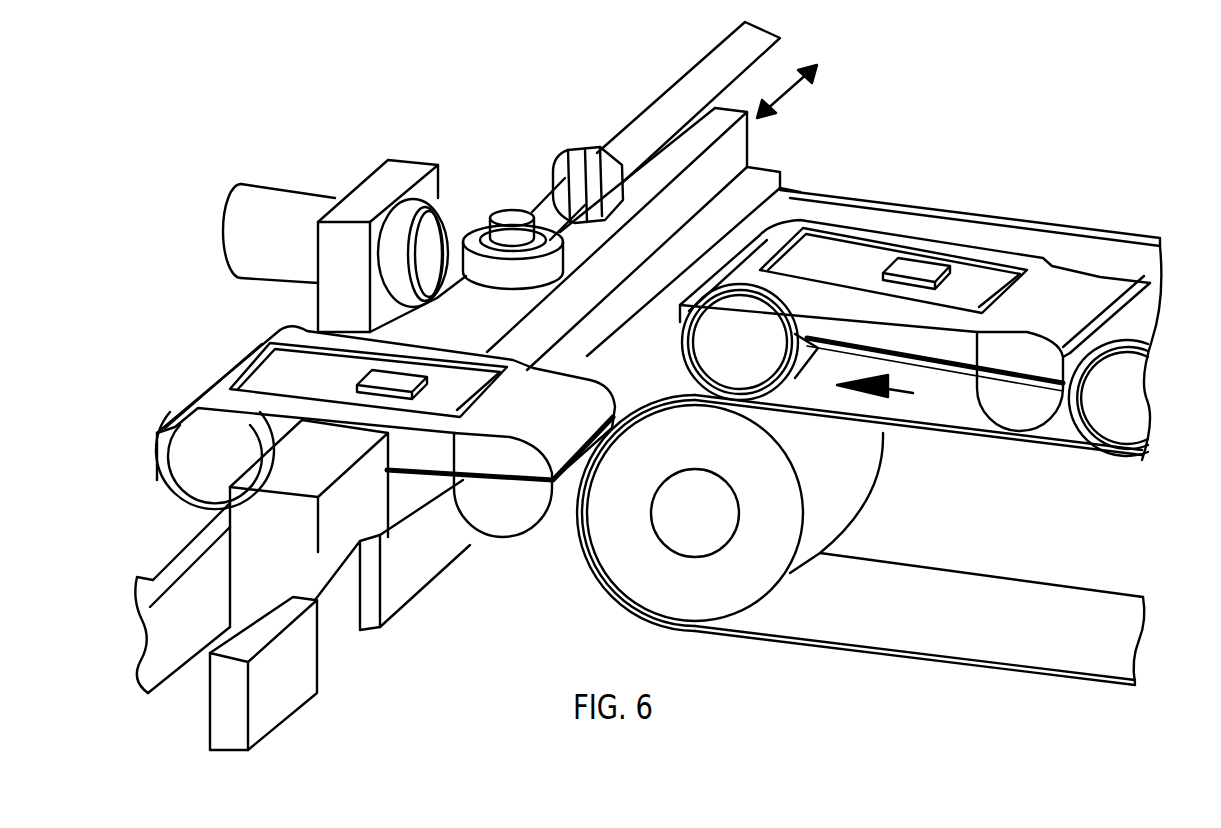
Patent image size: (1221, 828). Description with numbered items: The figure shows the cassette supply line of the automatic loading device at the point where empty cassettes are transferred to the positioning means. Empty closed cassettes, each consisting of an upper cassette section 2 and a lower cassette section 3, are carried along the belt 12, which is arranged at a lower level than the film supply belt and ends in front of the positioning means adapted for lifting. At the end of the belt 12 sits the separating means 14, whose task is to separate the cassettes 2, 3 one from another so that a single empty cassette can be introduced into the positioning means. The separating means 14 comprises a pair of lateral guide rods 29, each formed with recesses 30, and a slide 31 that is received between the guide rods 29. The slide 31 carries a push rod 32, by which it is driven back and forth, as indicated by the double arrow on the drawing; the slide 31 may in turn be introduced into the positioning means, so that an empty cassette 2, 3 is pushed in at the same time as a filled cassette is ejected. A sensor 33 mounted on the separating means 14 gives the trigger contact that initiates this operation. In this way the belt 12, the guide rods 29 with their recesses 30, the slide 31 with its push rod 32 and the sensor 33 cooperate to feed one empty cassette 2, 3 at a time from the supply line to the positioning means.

The upper cassette section 2 is at (596, 395).
The lower cassette section 3 is at (512, 522).
The belt 12 is at (915, 433).
The separating means 14 is at (352, 157).
The lateral guide rods 29 is at (218, 688).
The recesses 30 is at (347, 622).
The slide 31 is at (345, 462).
The push rod 32 is at (648, 117).
The sensor 33 is at (238, 267).